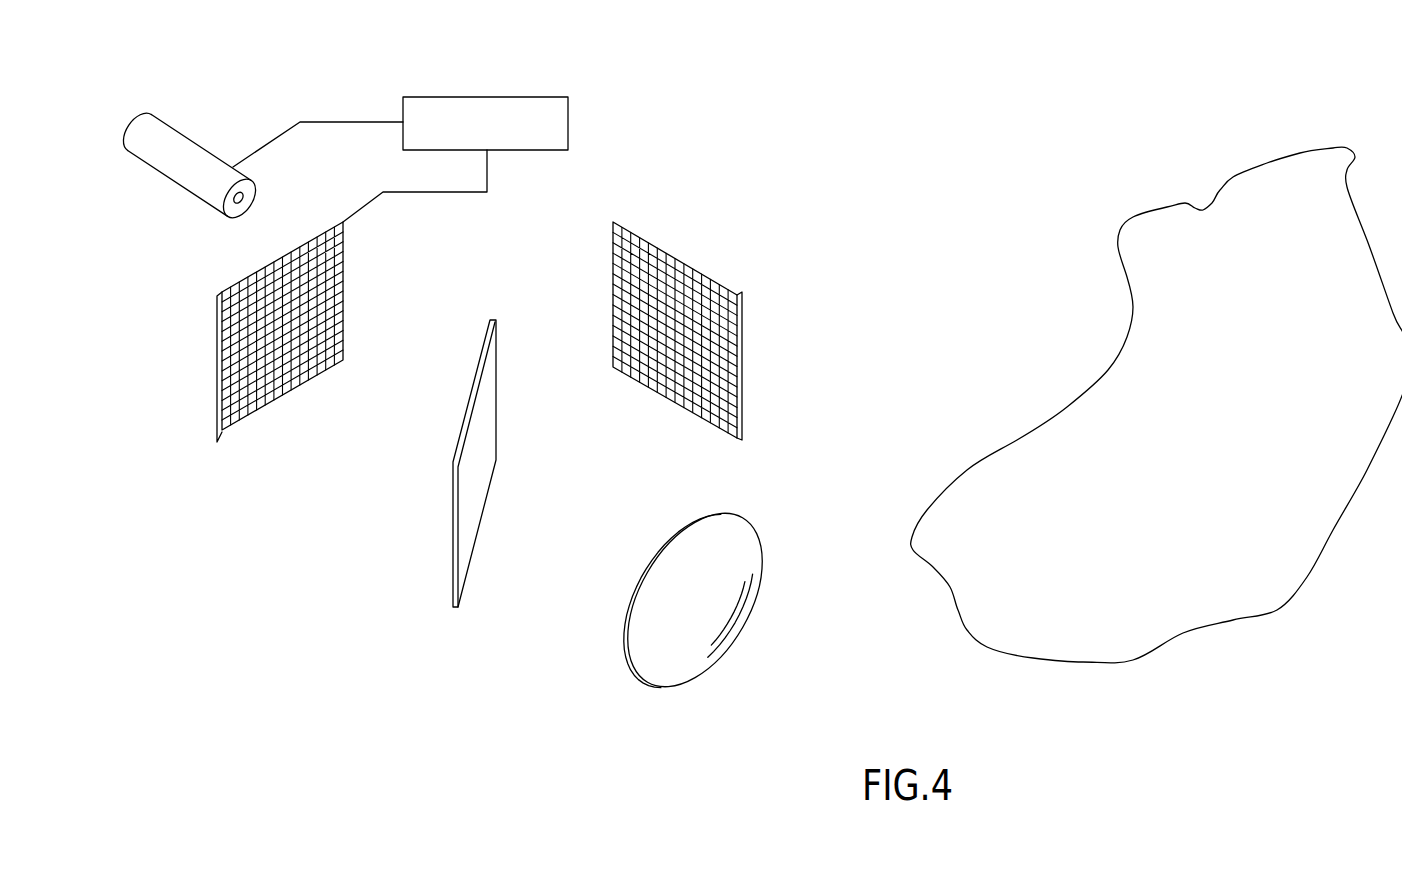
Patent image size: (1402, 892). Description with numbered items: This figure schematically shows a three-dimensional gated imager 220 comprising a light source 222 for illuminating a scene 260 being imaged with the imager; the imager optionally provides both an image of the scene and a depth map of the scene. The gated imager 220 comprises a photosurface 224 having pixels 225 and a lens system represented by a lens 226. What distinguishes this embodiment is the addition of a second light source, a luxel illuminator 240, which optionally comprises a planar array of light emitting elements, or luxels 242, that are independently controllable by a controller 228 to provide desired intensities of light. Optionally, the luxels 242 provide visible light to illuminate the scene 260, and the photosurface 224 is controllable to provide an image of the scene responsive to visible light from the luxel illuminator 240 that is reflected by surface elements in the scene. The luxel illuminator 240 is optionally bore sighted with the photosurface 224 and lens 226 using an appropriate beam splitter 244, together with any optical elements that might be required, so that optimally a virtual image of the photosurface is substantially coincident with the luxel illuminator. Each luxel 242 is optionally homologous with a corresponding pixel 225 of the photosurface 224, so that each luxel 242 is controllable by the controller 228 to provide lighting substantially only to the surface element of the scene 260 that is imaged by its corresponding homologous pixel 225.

The 3D gated imager 220 is at (680, 58).
The light source 222 is at (186, 130).
The photosurface 224 is at (194, 408).
The pixels 225 is at (253, 342).
The lens 226 is at (745, 520).
The controller 228 is at (487, 96).
The luxel illuminator 240 is at (673, 228).
The light emitting elements (luxels) 242 is at (692, 310).
The beam splitter 244 is at (490, 318).
The scene 260 is at (1292, 125).